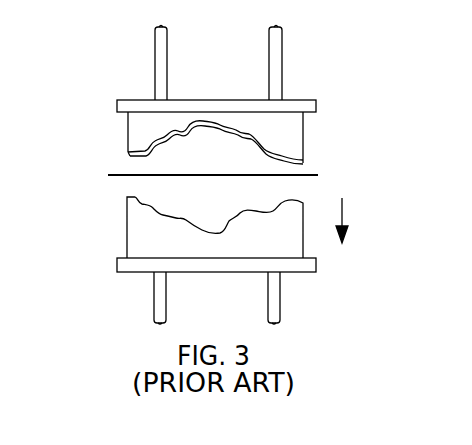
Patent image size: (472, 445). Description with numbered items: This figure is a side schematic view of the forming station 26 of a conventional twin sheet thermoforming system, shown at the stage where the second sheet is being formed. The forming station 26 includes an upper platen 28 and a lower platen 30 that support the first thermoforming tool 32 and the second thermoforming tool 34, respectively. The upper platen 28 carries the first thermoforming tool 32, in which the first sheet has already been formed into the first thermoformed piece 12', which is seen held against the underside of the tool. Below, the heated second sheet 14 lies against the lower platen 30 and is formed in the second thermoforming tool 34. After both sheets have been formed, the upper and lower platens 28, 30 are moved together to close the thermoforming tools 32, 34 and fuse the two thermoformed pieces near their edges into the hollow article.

The forming station 26 is at (140, 85).
The upper platen 28 is at (318, 100).
The first thermoforming tool 32 is at (128, 128).
The first thermoformed piece 12' is at (181, 150).
The second sheet 14 is at (315, 175).
The second thermoforming tool 34 is at (127, 228).
The lower platen 30 is at (316, 272).